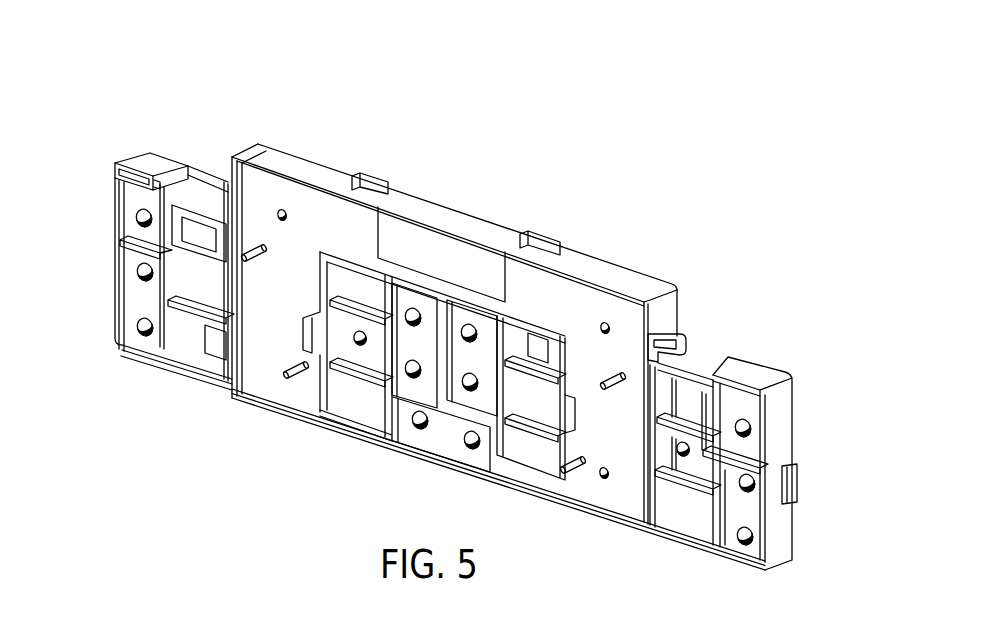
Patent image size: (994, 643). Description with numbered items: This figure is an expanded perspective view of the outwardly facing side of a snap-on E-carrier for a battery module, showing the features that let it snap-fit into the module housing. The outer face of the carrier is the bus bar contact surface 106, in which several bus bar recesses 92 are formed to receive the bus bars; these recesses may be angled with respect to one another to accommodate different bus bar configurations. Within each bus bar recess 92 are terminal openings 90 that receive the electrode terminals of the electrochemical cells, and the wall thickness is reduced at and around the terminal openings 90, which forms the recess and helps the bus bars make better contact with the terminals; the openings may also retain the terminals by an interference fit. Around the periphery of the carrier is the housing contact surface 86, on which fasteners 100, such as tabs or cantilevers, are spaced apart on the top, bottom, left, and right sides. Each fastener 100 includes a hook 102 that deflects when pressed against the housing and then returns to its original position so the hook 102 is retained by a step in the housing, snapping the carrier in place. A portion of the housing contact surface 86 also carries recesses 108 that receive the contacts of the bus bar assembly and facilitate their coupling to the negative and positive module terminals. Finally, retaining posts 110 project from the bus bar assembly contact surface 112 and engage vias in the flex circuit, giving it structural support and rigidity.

The housing contact surface 86 is at (790, 408).
The terminal openings 90 is at (152, 322).
The bus bar recesses 92 is at (128, 215).
The fasteners 100 is at (376, 135).
The hook 102 is at (388, 180).
The bus bar contact surface 106 is at (733, 520).
The recesses 108 is at (215, 142).
The retaining posts 110 is at (284, 378).
The bus bar assembly contact surface 112 is at (178, 393).